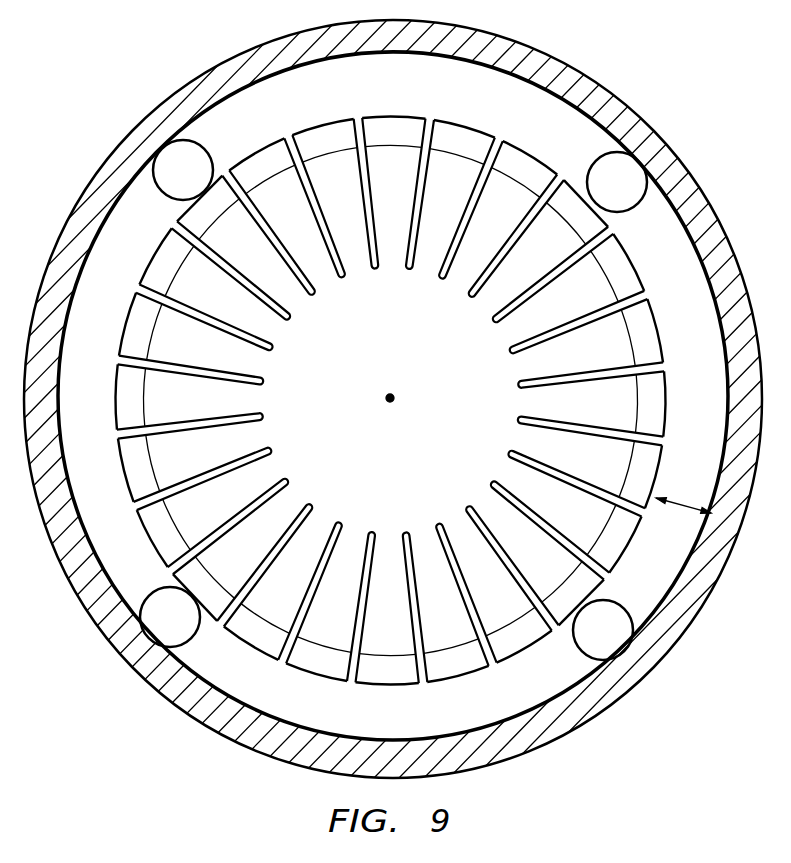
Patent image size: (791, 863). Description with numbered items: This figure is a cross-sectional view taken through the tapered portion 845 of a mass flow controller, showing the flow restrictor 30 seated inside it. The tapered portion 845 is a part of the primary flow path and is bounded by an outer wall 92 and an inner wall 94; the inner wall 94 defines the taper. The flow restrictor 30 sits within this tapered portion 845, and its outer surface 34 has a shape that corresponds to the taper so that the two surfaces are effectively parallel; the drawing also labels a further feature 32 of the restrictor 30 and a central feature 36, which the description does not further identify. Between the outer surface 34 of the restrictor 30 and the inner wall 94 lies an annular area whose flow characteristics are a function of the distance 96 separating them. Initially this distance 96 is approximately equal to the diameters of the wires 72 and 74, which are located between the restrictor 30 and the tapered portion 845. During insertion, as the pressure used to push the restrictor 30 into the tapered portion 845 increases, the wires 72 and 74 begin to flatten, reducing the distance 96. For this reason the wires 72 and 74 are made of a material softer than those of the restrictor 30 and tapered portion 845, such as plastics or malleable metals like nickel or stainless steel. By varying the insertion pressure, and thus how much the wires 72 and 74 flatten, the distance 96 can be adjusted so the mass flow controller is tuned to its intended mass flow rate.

The tapered portion 845 is at (395, 405).
The outer wall 92 is at (705, 197).
The inner wall 94 is at (690, 259).
The distance 96 is at (679, 507).
The flow restrictor 30 is at (404, 403).
The slot 32 is at (289, 137).
The outer surface 34 is at (404, 118).
The center axis 36 is at (388, 396).
The wire 72 is at (196, 184).
The wire 74 is at (630, 196).